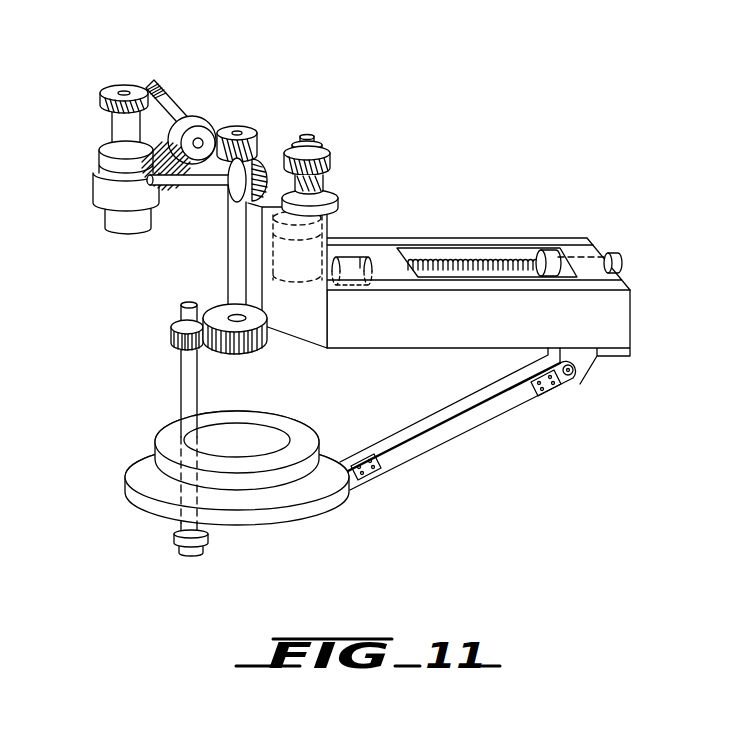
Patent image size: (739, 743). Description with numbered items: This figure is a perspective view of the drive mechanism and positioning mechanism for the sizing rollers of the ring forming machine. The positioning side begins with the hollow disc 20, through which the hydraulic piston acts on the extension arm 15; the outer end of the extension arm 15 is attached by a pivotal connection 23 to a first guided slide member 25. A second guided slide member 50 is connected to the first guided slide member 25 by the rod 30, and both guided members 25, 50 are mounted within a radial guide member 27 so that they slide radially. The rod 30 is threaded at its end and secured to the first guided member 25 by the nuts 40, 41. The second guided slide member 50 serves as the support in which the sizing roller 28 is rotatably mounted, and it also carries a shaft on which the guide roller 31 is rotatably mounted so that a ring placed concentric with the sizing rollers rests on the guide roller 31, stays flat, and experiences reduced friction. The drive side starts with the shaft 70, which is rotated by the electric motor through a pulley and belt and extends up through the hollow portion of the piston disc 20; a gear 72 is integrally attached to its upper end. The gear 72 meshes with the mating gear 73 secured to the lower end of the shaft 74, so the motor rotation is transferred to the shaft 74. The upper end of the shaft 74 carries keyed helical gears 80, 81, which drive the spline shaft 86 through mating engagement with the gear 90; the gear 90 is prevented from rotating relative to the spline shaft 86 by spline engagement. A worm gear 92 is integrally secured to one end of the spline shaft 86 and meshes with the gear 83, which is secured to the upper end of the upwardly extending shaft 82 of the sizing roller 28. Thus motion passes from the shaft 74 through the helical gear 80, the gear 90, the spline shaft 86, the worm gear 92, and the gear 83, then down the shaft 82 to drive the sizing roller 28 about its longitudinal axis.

The extension arm 15 is at (481, 425).
The hollow disc 20 is at (328, 508).
The pivotal connection 23 is at (568, 376).
The first guided slide member 25 is at (600, 273).
The radial guide member 27 is at (443, 333).
The sizing roller 28 is at (92, 183).
The rod 30 is at (482, 258).
The guide roller 31 is at (360, 256).
The nut 40 is at (541, 247).
The nut 41 is at (608, 254).
The second guided slide member 50 is at (388, 267).
The shaft 70 is at (180, 388).
The gear 72 is at (172, 330).
The mating gear 73 is at (243, 357).
The shaft 74 is at (228, 254).
The helical gear 80 is at (257, 130).
The helical gear 81 is at (222, 176).
The upwardly extending shaft 82 is at (112, 128).
The gear 83 is at (110, 84).
The spline shaft 86 is at (177, 112).
The gear 90 is at (215, 115).
The worm gear 92 is at (152, 83).